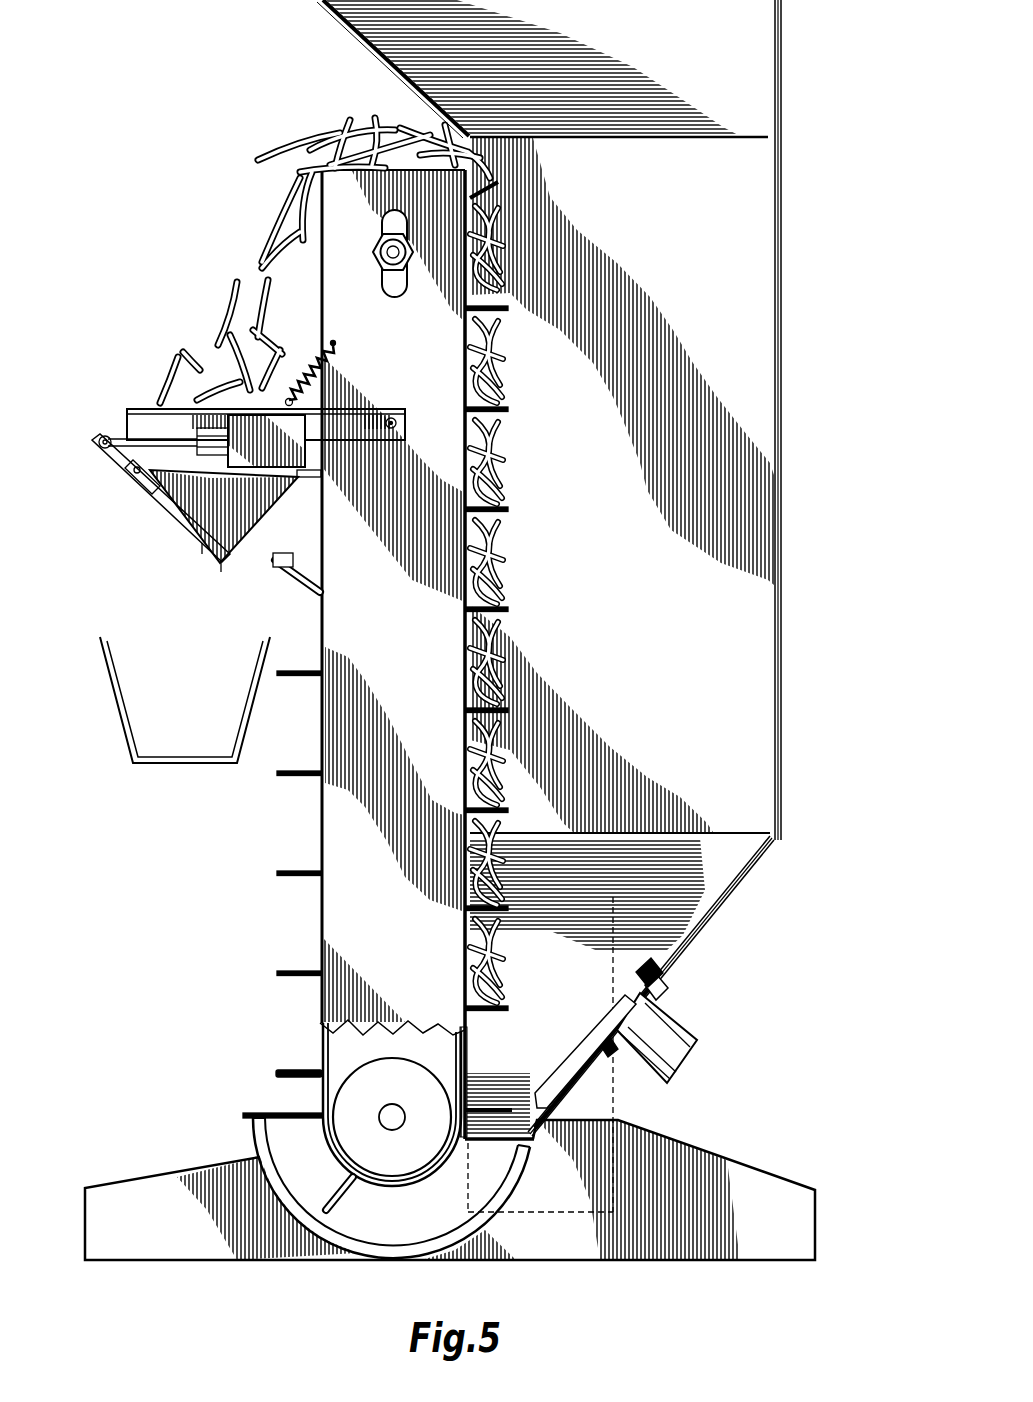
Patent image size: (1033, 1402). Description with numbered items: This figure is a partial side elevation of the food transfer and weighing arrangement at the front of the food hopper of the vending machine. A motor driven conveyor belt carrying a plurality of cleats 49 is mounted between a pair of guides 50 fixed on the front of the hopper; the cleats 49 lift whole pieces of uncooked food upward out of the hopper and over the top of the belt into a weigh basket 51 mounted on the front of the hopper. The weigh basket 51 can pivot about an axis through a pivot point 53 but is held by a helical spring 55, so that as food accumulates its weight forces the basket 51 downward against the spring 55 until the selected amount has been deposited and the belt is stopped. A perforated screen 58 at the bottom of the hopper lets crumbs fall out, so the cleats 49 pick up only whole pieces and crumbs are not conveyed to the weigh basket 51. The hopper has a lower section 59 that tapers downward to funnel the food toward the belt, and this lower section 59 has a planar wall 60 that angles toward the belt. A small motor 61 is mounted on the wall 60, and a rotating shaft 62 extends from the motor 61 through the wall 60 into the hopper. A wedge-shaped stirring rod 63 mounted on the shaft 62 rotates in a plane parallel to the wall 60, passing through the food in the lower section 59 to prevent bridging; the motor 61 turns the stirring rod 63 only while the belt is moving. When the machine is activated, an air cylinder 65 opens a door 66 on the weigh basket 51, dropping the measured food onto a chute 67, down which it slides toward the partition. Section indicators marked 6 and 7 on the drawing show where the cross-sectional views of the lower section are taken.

The cleats 49 is at (490, 196).
The guides 50 is at (440, 632).
The weigh basket 51 is at (257, 502).
The pivot point 53 is at (396, 425).
The helical spring 55 is at (312, 365).
The perforated screen 58 is at (405, 1245).
The lower section 59 is at (728, 888).
The planar wall 60 is at (683, 952).
The small motor 61 is at (680, 1063).
The rotating shaft 62 is at (607, 1002).
The stirring rod 63 is at (587, 1027).
The air cylinder 65 is at (240, 405).
The door 66 is at (180, 525).
The chute 67 is at (123, 733).
The section line 6- 6 is at (566, 1031).
The section line 7- 7 is at (734, 864).